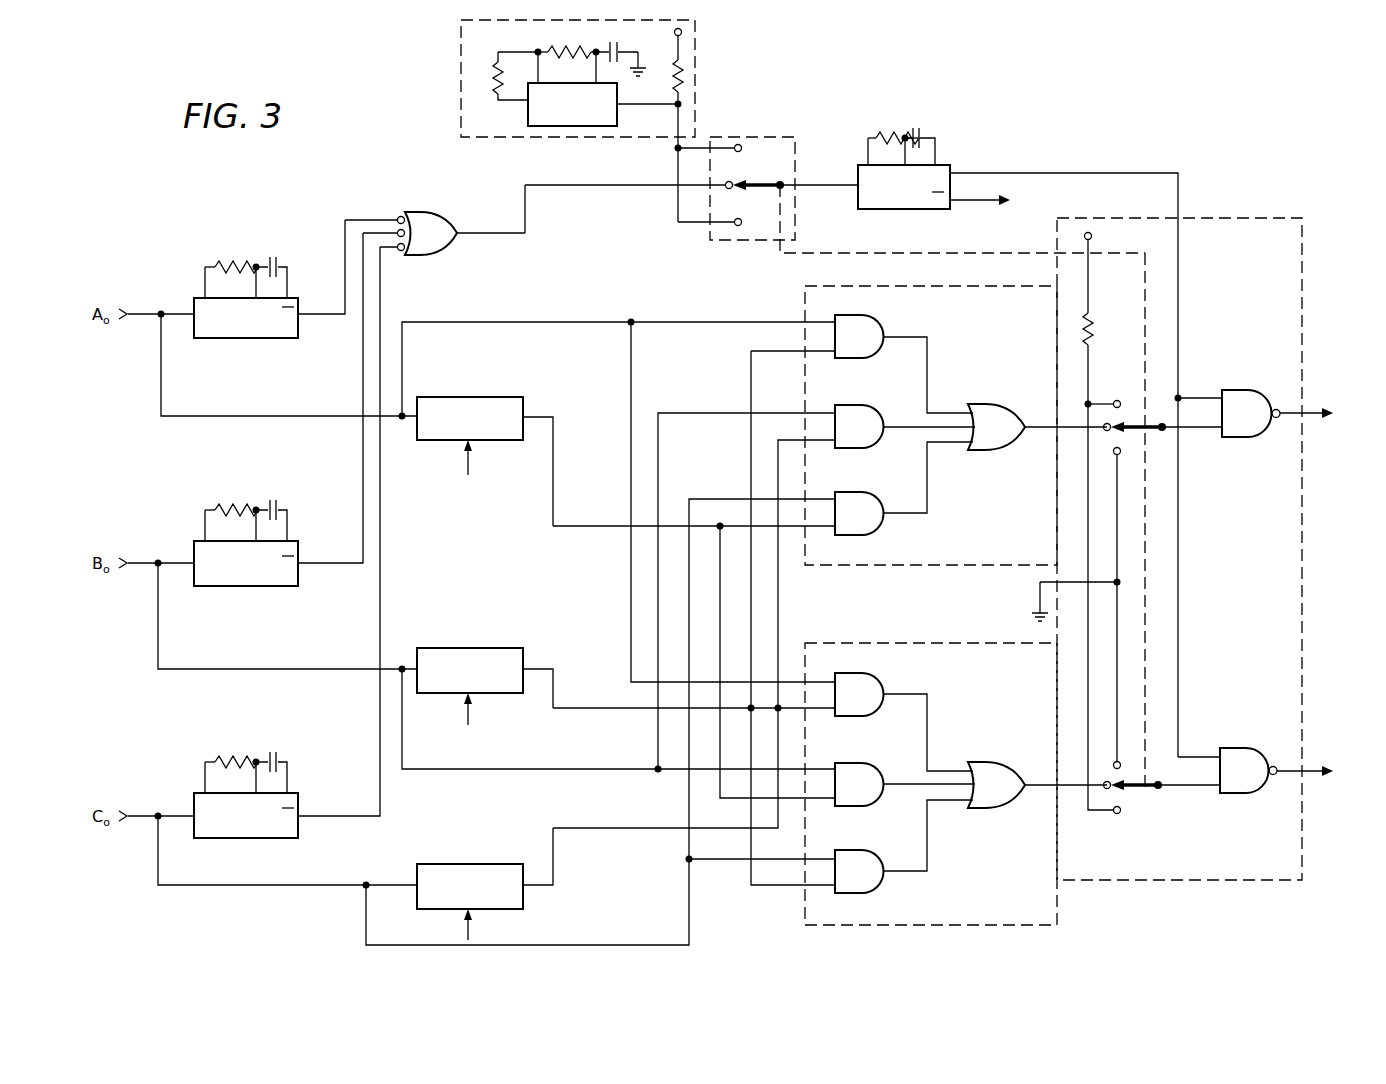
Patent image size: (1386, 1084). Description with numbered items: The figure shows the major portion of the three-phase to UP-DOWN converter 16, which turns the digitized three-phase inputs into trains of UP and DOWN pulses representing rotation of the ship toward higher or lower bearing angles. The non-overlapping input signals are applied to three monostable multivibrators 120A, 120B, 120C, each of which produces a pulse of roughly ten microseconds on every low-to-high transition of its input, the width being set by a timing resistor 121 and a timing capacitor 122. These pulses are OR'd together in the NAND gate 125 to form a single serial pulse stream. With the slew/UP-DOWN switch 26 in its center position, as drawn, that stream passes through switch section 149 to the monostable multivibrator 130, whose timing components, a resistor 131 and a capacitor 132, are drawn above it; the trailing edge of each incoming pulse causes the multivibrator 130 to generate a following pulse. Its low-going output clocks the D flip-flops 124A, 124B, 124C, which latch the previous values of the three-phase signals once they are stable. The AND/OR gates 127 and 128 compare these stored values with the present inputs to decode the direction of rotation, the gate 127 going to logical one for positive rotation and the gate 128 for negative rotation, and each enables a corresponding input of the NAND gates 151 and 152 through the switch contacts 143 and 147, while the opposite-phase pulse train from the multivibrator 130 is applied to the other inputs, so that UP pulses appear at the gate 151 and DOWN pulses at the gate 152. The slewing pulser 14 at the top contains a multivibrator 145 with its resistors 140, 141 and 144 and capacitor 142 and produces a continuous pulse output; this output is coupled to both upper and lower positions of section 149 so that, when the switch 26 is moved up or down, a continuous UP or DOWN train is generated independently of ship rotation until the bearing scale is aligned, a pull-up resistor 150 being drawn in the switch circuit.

The slewing pulser 14 is at (696, 58).
The multivibrator 145 is at (606, 123).
The resistor 140 is at (497, 62).
The resistor 141 is at (556, 48).
The capacitor 142 is at (612, 45).
The resistor 144 is at (671, 81).
The slew/UP-DOWN switch 26 is at (708, 232).
The switch section 149 is at (762, 163).
The monostable multivibrator 130 is at (948, 161).
The resistor 131 is at (880, 132).
The capacitor 132 is at (917, 130).
The NAND gate 125 is at (452, 256).
The monostable multivibrator 120A is at (296, 338).
The monostable multivibrator 120B is at (296, 586).
The monostable multivibrator 120C is at (296, 838).
The timing resistor 121 is at (226, 266).
The timing capacitor 122 is at (273, 262).
The three-phase to UP-DOWN converter 16 is at (204, 921).
The D flip-flop 124A is at (478, 395).
The D flip-flop 124B is at (500, 632).
The D flip-flop 124C is at (468, 863).
The AND/OR gate 127 is at (873, 284).
The AND/OR gate 128 is at (880, 642).
The resistor 150 is at (1093, 326).
The switch contact arm 143 is at (1138, 404).
The NAND gate 151 is at (1238, 438).
The switch contact arm 147 is at (1137, 774).
The NAND gate 152 is at (1245, 795).